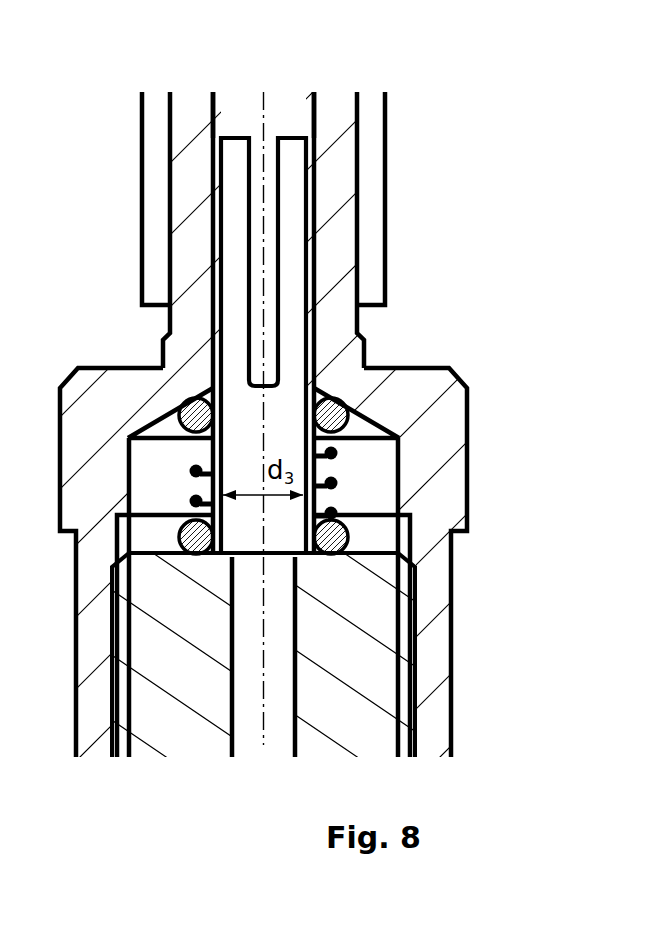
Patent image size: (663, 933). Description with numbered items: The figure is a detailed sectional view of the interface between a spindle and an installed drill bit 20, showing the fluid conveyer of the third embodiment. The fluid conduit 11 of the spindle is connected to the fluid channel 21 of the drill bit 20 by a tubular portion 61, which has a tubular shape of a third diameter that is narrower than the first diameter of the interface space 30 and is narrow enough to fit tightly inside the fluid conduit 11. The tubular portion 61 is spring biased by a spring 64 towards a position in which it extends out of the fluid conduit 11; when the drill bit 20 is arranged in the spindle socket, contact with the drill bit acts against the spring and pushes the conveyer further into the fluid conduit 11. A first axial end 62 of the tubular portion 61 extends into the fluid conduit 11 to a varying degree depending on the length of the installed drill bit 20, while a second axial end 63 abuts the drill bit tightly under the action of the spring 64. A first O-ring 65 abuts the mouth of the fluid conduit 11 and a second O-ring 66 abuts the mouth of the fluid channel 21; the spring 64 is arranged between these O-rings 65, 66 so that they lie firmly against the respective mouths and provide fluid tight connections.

The fluid conduit 11 is at (213, 110).
The drill bit 20 is at (370, 715).
The fluid channel 21 is at (283, 639).
The interface space 30 is at (368, 477).
The tubular portion 61 is at (278, 413).
The first axial end 62 is at (291, 138).
The second axial end 63 is at (332, 562).
The spring 64 is at (340, 485).
The first O-ring 65 is at (196, 415).
The second O-ring 66 is at (180, 538).